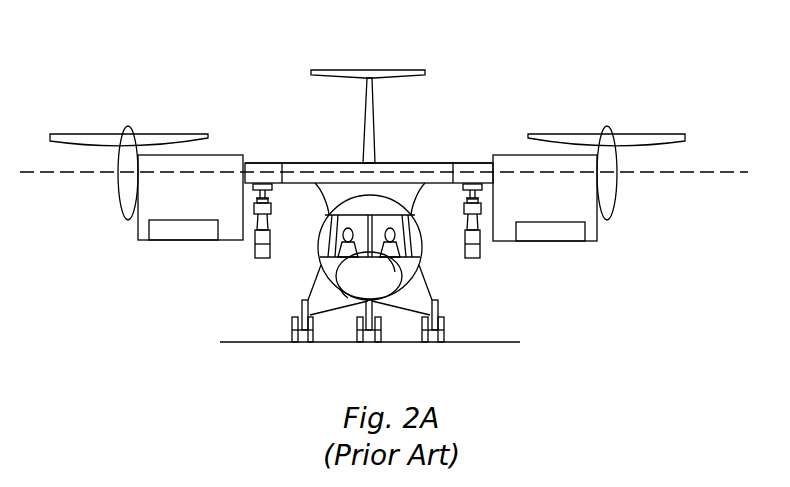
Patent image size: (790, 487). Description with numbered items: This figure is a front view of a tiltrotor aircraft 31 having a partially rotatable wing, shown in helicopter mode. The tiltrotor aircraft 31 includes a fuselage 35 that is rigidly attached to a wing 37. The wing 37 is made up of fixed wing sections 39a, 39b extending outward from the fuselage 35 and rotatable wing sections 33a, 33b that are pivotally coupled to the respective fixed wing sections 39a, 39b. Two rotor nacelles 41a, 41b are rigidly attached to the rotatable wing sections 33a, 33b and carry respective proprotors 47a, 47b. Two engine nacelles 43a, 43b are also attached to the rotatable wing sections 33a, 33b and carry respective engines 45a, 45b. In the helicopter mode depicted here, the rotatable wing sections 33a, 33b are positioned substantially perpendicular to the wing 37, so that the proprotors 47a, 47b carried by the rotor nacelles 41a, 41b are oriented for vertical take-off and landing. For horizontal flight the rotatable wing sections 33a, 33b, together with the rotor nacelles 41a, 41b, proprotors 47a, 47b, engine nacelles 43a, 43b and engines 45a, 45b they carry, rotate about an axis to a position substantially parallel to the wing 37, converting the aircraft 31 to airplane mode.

The tiltrotor aircraft 31 is at (503, 62).
The rotatable wing section 33a is at (223, 241).
The rotatable wing section 33b is at (589, 242).
The fuselage 35 is at (318, 251).
The wing 37 is at (340, 154).
The fixed wing section 39a is at (315, 162).
The fixed wing section 39b is at (392, 162).
The rotor nacelle 41a is at (117, 187).
The rotor nacelle 41b is at (620, 197).
The engine nacelle 43a is at (252, 240).
The engine nacelle 43b is at (476, 259).
The engine 45a is at (257, 226).
The engine 45b is at (479, 232).
The proprotor 47a is at (110, 131).
The proprotor 47b is at (626, 132).